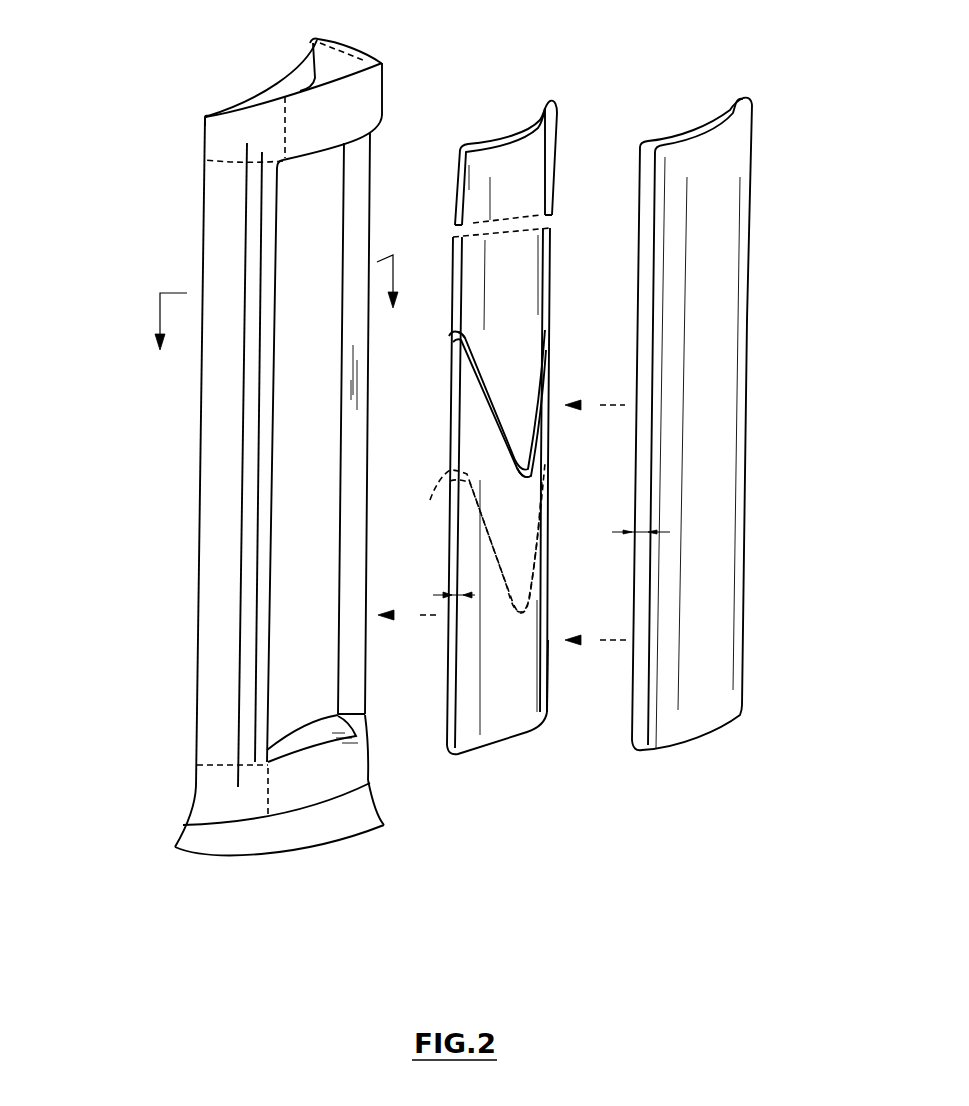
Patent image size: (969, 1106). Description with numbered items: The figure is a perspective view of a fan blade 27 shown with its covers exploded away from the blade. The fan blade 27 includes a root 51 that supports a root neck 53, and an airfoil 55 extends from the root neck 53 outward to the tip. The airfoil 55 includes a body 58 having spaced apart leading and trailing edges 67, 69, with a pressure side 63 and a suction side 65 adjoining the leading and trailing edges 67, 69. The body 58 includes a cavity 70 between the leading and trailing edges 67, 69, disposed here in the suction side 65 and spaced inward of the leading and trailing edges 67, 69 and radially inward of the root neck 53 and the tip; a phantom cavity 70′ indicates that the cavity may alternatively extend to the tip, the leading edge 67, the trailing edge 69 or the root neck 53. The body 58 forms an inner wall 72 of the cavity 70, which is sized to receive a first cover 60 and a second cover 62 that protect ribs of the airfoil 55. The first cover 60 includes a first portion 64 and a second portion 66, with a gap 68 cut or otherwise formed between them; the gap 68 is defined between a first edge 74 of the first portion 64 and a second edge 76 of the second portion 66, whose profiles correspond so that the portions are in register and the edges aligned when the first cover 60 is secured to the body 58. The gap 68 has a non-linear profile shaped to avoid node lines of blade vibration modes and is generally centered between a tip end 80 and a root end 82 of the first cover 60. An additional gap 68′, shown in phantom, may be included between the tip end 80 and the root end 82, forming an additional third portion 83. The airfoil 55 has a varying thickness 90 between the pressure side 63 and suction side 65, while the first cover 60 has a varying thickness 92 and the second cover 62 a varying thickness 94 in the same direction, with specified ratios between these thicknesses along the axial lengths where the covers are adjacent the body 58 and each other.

The fan blade 27 is at (400, 911).
The root 51 is at (277, 853).
The root neck 53 is at (268, 78).
The airfoil 55 is at (182, 434).
The body 58 is at (237, 368).
The first cover 60 is at (541, 66).
The second cover 62 is at (742, 64).
The pressure side 63 is at (242, 93).
The first portion 64 is at (553, 262).
The suction side 65 is at (371, 133).
The second portion 66 is at (547, 540).
The leading edge 67 is at (187, 272).
The gap 68 is at (450, 334).
The additional gap 68′ is at (478, 224).
The trailing edge 69 is at (330, 25).
The cavity 70 is at (293, 469).
The cavity 70′ is at (232, 163).
The inner wall 72 is at (293, 472).
The first edge 74 is at (472, 332).
The second edge 76 is at (540, 478).
The tip end 80 is at (498, 123).
The root end 82 is at (527, 753).
The third portion 83 is at (545, 683).
The thickness 90 is at (224, 111).
The thickness 92 is at (440, 595).
The thickness 94 is at (640, 532).